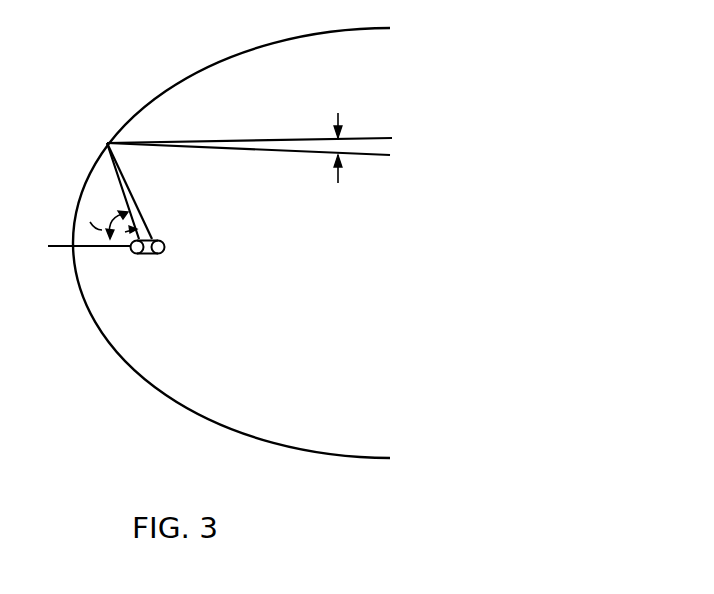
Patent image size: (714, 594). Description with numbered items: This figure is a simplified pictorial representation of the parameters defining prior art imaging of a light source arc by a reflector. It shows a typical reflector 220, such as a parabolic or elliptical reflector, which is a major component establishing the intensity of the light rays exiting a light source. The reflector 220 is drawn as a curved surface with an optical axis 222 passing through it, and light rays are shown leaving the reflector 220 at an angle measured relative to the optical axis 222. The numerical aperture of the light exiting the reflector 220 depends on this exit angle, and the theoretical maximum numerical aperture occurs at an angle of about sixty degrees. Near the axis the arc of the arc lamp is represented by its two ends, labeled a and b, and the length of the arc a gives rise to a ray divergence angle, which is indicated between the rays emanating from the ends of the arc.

The reflector 220 is at (148, 382).
The optical axis 222 is at (87, 248).
The arc length a is at (145, 262).
The light source position b is at (170, 246).